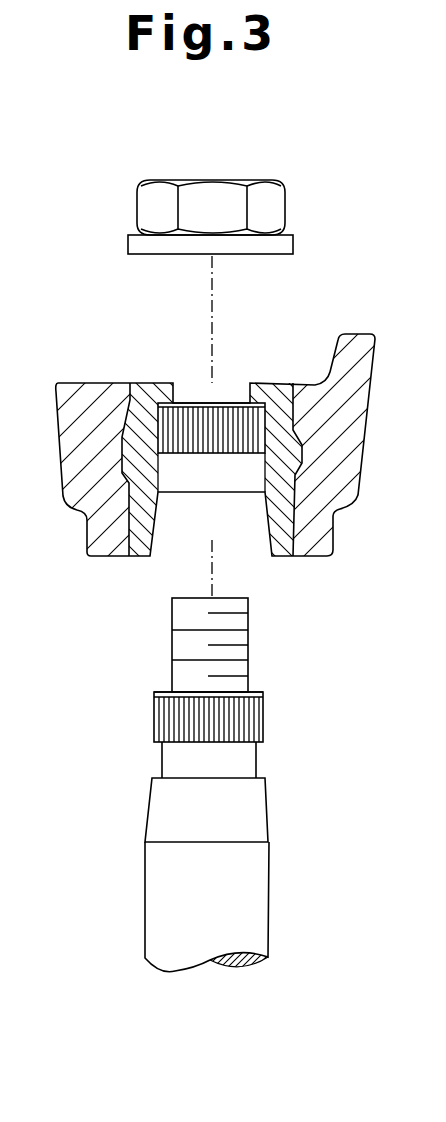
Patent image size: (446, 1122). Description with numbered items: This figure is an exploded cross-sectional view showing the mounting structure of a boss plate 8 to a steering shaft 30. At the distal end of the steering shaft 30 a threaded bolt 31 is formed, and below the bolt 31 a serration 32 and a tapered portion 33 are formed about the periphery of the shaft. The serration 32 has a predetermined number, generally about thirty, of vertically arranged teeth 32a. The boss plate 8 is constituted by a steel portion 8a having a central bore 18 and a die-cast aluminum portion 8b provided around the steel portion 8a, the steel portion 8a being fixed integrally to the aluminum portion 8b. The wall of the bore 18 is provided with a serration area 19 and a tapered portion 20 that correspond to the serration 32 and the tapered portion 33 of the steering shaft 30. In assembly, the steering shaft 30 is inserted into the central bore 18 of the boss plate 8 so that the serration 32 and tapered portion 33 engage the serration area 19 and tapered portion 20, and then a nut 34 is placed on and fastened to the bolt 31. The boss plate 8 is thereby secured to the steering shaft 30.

The nut 34 is at (285, 199).
The serration area 19 is at (232, 412).
The central bore 18 is at (265, 465).
The boss plate 8 is at (223, 497).
The steel portion 8a is at (135, 542).
The die-cast aluminum portion 8b is at (102, 542).
The tapered portion 20 is at (262, 532).
The bolt 31 is at (248, 640).
The serration 32 is at (263, 722).
The teeth 32a is at (183, 702).
The tapered portion 33 is at (268, 808).
The steering shaft 30 is at (269, 892).